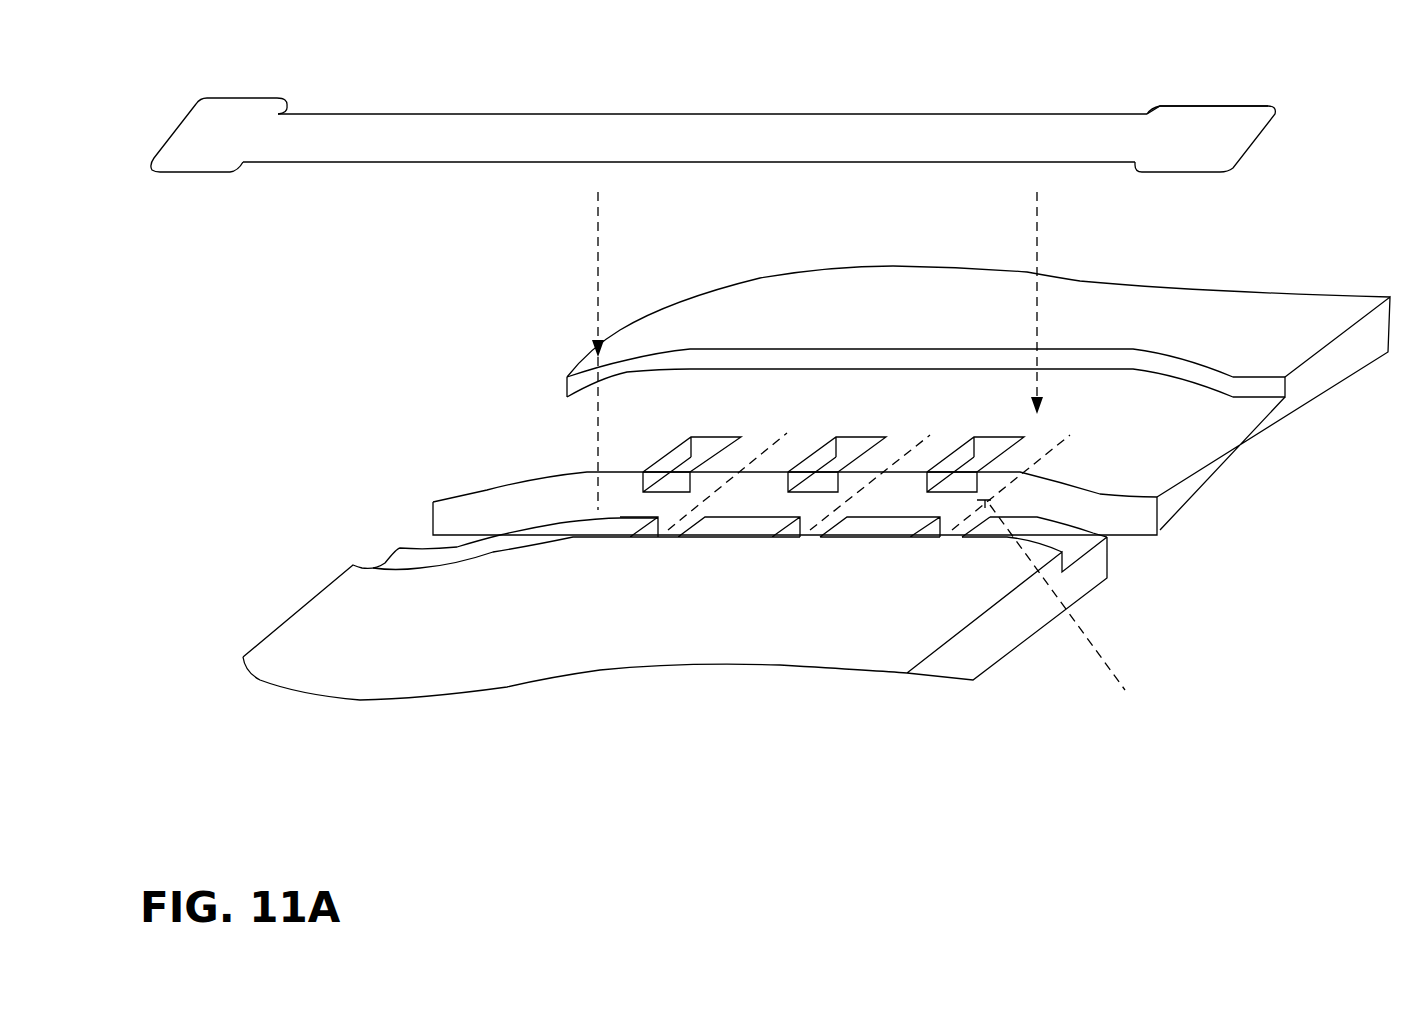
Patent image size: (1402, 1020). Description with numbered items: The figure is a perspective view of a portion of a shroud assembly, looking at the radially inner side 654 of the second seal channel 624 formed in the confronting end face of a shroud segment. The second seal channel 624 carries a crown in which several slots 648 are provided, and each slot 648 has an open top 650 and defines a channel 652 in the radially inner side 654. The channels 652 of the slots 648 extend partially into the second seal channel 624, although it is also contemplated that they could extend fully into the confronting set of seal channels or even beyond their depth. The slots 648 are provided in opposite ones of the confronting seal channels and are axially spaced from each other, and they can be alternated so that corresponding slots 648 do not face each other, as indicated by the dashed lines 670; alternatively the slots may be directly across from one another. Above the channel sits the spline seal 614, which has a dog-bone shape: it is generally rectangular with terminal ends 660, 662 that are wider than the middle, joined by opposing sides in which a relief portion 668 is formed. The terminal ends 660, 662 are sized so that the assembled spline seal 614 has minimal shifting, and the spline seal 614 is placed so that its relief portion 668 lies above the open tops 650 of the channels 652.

The spline seal 614 is at (767, 133).
The terminal end 662 is at (232, 120).
The relief portion 668 is at (1143, 104).
The terminal end 660 is at (1205, 140).
The second seal channel 624 is at (1132, 469).
The radially inner side 654 is at (1212, 258).
The slot 648 is at (948, 452).
The open top 650 is at (662, 462).
The channel 652 is at (685, 450).
The dashed lines 670 is at (1073, 606).